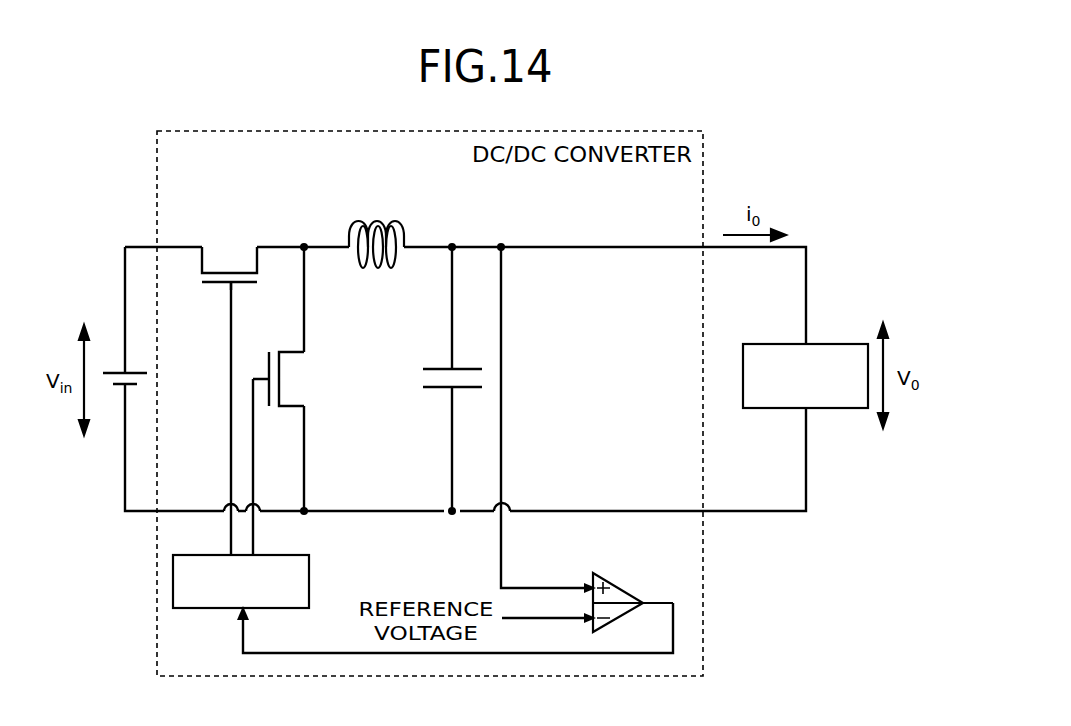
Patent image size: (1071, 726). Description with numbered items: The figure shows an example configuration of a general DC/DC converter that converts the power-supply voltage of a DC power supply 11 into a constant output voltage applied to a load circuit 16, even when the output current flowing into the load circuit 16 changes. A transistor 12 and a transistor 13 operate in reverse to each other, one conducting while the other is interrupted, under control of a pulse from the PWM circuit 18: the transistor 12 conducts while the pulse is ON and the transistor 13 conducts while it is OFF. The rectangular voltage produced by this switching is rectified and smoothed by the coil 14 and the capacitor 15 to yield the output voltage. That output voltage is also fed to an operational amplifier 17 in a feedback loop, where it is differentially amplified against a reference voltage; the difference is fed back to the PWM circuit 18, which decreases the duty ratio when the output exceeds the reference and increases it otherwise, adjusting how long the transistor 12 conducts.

The DC power supply 11 is at (114, 366).
The transistor 12 is at (228, 256).
The transistor 13 is at (299, 372).
The coil 14 is at (383, 220).
The capacitor 15 is at (439, 362).
The load circuit 16 is at (826, 344).
The operational amplifier 17 is at (604, 574).
The Pulse Width Modulation (PWM) circuit 18 is at (280, 557).